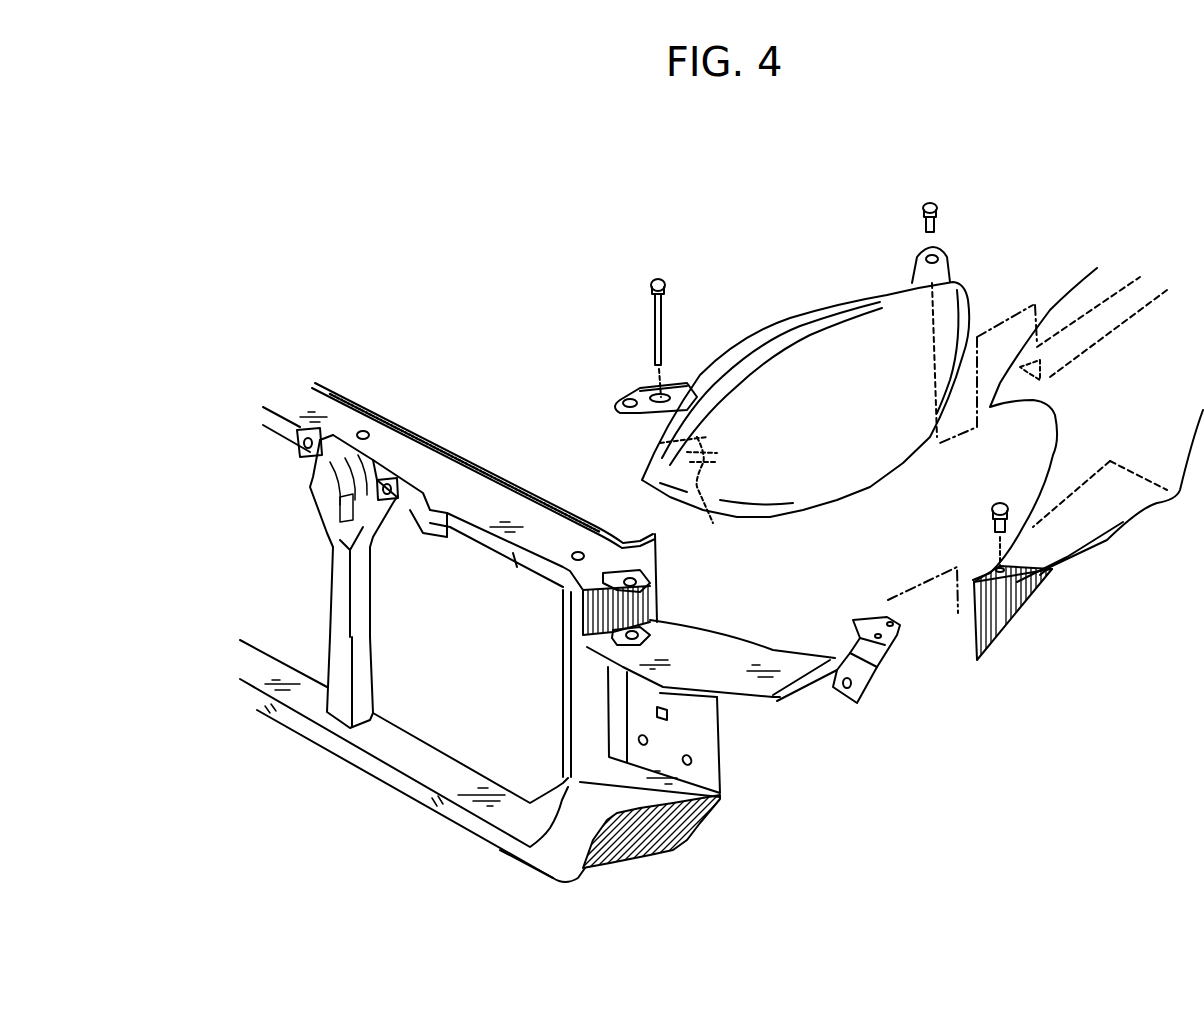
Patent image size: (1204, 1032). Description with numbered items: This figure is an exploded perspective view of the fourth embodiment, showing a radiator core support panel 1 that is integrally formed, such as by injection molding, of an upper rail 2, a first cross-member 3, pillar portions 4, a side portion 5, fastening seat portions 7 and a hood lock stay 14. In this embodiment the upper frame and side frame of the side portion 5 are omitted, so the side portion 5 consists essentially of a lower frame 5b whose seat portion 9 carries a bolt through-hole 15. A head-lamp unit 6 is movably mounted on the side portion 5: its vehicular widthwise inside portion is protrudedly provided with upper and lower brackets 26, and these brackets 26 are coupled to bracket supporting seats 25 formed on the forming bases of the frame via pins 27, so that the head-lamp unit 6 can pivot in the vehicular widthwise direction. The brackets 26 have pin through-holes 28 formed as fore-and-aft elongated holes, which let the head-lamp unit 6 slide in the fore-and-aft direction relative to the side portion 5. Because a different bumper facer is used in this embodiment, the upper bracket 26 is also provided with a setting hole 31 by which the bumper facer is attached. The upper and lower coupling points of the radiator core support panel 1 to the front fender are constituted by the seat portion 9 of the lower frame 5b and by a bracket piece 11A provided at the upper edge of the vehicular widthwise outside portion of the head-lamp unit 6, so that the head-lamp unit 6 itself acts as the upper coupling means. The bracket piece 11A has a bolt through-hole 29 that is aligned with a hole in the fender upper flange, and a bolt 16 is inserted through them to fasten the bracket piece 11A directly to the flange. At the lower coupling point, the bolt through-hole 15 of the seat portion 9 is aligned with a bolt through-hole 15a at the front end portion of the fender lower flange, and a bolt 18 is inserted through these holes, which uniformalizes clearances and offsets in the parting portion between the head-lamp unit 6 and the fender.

The radiator core support panel 1 is at (359, 398).
The upper rail 2 is at (420, 462).
The first cross-member 3 is at (417, 763).
The pillar portions 4 is at (573, 705).
The side portion 5 is at (777, 687).
The lower frame 5b is at (787, 647).
The head-lamp unit 6 is at (808, 304).
The fastening seat portions 7 is at (710, 768).
The seat portion 9 is at (877, 690).
The bracket piece 11A is at (950, 265).
The hood lock stay 14 is at (340, 612).
The bolt through-hole 15 is at (898, 624).
The bolt through-hole 15a is at (1028, 612).
The bolt 16 is at (935, 200).
The bolt 18 is at (1003, 500).
The bracket supporting seats 25 is at (622, 575).
The brackets 26 is at (628, 397).
The pins 27 is at (666, 290).
The pin through-holes 28 is at (667, 393).
The bolt through-hole 29 is at (925, 252).
The setting hole 31 is at (617, 400).